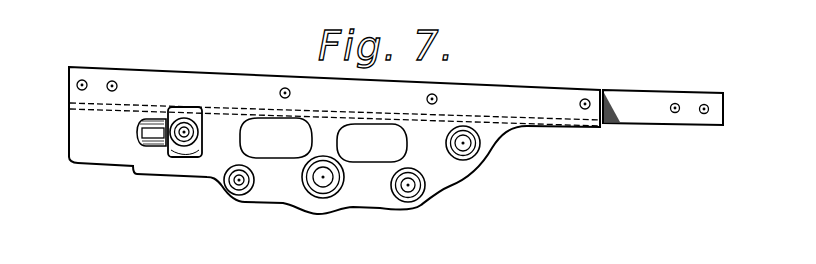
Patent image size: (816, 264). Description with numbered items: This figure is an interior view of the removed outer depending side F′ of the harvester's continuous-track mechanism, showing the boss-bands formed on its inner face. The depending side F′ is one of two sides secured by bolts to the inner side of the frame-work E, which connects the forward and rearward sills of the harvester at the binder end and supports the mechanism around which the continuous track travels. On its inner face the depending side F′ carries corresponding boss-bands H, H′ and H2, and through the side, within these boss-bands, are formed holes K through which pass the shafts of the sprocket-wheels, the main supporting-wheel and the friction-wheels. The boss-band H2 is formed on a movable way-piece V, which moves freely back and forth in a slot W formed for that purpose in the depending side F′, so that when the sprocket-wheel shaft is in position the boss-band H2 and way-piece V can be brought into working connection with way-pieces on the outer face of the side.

The depending side F′ is at (334, 140).
The frame-work E is at (663, 107).
The movable way-piece V is at (184, 108).
The boss-band H2 is at (198, 133).
The slot W is at (150, 139).
The boss-band H is at (227, 174).
The boss-band H′ is at (447, 143).
The hole K is at (176, 146).